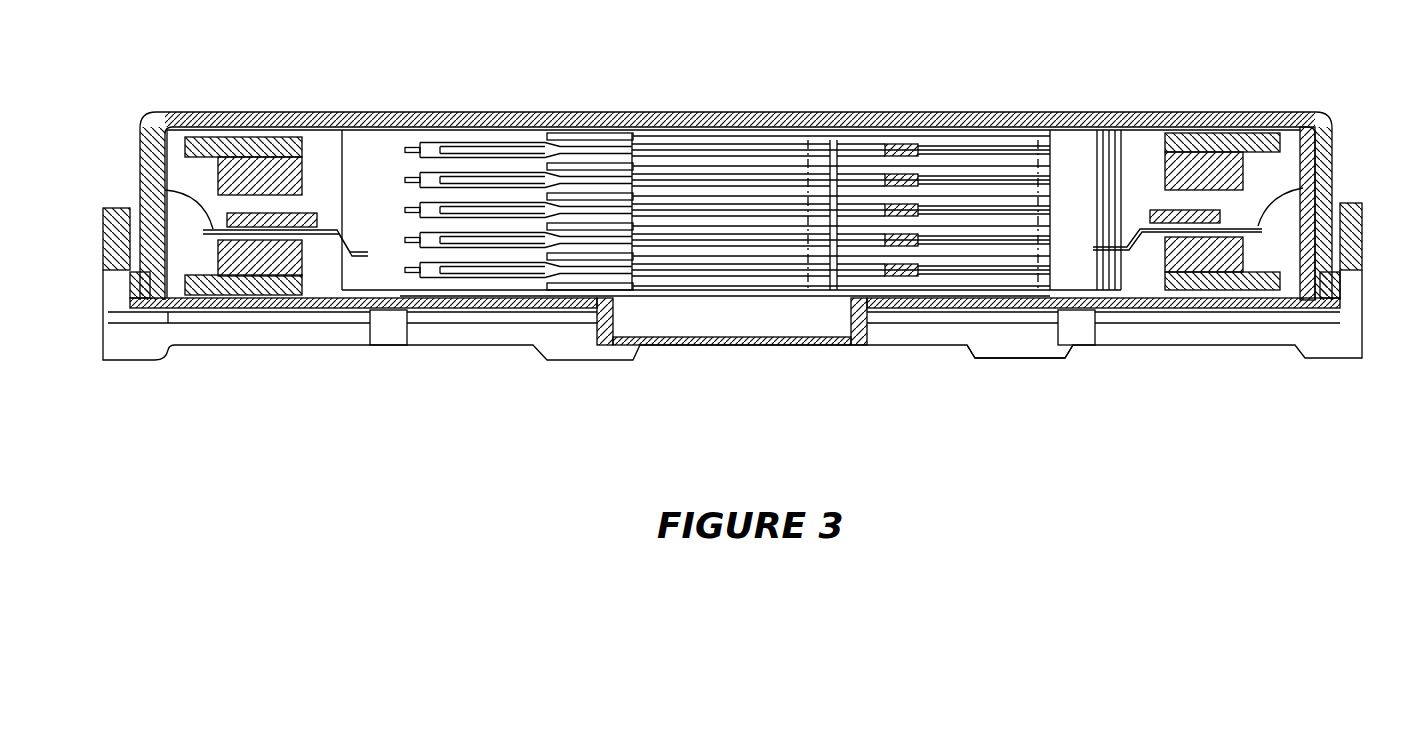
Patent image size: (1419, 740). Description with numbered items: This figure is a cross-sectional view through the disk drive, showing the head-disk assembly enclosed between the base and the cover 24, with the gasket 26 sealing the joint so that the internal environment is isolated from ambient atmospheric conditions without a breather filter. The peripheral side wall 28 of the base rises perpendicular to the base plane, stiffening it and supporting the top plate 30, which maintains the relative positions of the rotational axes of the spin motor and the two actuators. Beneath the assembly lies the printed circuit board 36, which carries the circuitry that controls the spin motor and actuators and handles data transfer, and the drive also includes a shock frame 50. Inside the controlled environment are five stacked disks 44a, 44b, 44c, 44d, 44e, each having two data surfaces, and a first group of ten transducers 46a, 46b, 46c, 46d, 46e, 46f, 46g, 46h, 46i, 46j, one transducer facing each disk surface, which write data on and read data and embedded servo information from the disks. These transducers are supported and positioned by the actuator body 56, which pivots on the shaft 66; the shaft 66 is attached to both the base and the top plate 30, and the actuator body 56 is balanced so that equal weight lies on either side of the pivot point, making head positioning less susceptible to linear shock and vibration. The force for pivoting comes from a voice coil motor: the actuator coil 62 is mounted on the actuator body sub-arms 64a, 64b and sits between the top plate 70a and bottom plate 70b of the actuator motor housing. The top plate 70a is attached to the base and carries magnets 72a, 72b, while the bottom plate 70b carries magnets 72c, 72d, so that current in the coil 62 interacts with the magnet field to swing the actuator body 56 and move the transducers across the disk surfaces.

The cover 24 is at (1222, 113).
The gasket 26 is at (143, 288).
The peripheral side wall 28 is at (1317, 177).
The top plate 30 is at (960, 127).
The printed circuit board 36 is at (1173, 310).
The disk 44a is at (709, 150).
The disk 44b is at (709, 180).
The disk 44c is at (709, 210).
The disk 44d is at (709, 240).
The disk 44e is at (709, 270).
The transducer 46a is at (691, 140).
The transducer 46b is at (699, 163).
The transducer 46c is at (700, 180).
The transducer 46d is at (701, 196).
The transducer 46e is at (701, 212).
The transducer 46f is at (701, 228).
The transducer 46g is at (702, 243).
The transducer 46h is at (701, 258).
The transducer 46i is at (700, 272).
The transducer 46j is at (693, 288).
The shock frame 50 is at (1003, 342).
The actuator body 56 is at (363, 147).
The actuator coil 62 is at (305, 213).
The actuator body sub-arm 64a is at (1337, 193).
The actuator body sub-arm 64b is at (160, 190).
The shaft 66 is at (390, 328).
The top plate 70a is at (242, 145).
The bottom plate 70b is at (210, 285).
The magnet 72a is at (225, 173).
The magnet 72b is at (1232, 173).
The magnet 72c is at (255, 253).
The magnet 72d is at (1227, 253).